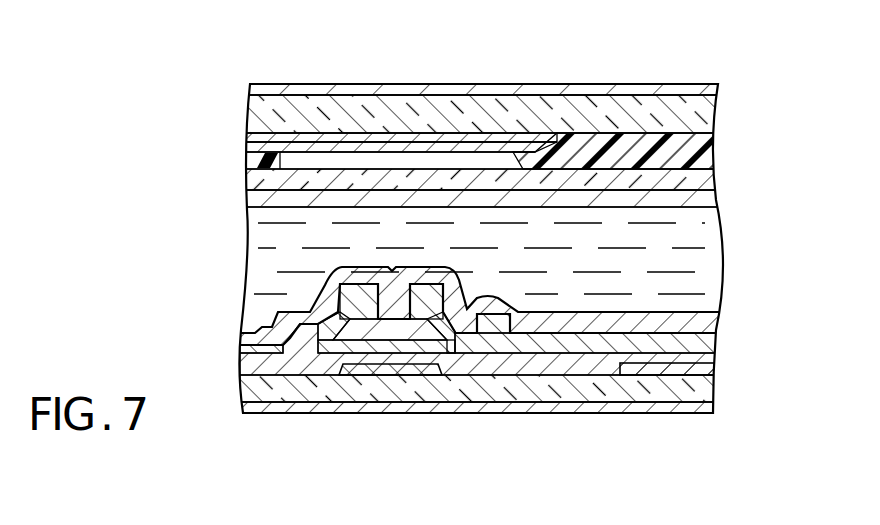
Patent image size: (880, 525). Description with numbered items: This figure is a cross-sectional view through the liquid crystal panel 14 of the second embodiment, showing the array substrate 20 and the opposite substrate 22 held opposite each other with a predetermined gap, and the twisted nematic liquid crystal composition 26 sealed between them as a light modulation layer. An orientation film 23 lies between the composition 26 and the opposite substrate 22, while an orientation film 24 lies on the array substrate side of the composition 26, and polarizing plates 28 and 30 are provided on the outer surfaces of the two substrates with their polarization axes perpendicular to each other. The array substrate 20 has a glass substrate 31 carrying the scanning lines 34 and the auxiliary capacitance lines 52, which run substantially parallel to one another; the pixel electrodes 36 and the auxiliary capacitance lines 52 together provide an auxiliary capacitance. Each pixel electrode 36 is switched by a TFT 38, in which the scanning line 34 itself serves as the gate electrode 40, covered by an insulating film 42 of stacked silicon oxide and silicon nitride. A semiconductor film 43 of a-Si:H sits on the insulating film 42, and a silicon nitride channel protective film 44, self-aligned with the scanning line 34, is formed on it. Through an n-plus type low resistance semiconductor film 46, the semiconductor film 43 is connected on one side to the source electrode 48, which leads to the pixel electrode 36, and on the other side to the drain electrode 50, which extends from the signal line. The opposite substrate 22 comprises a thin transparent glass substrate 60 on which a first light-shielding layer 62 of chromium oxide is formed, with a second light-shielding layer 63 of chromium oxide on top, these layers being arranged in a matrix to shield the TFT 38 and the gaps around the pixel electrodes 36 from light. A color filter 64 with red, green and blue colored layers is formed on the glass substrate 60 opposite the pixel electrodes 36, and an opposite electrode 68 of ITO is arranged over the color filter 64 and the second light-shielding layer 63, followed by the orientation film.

The liquid crystal panel 14 is at (374, 76).
The array substrate 20 is at (735, 386).
The opposite substrate 22 is at (735, 142).
The orientation film 23 is at (710, 318).
The orientation film 24 is at (704, 206).
The liquid crystal composition 26 is at (710, 260).
The polarizing plate 28 is at (710, 411).
The polarizing plate 30 is at (704, 84).
The glass substrate 31 is at (657, 393).
The scanning line 34 is at (415, 337).
The pixel electrode 36 is at (590, 345).
The TFT 38 is at (375, 365).
The gate electrode 40 is at (380, 372).
The insulating film 42 is at (543, 367).
The semiconductor film 43 is at (358, 346).
The channel protective film 44 is at (430, 350).
The low resistance semiconductor film 46 is at (319, 345).
The source electrode 48 is at (502, 335).
The drain electrode 50 is at (246, 334).
The auxiliary capacitance line 52 is at (708, 368).
The glass substrate 60 is at (704, 110).
The first light-shielding layer 62 is at (497, 131).
The second light-shielding layer 63 is at (402, 150).
The color filter 64 is at (268, 158).
The opposite electrode 68 is at (704, 184).